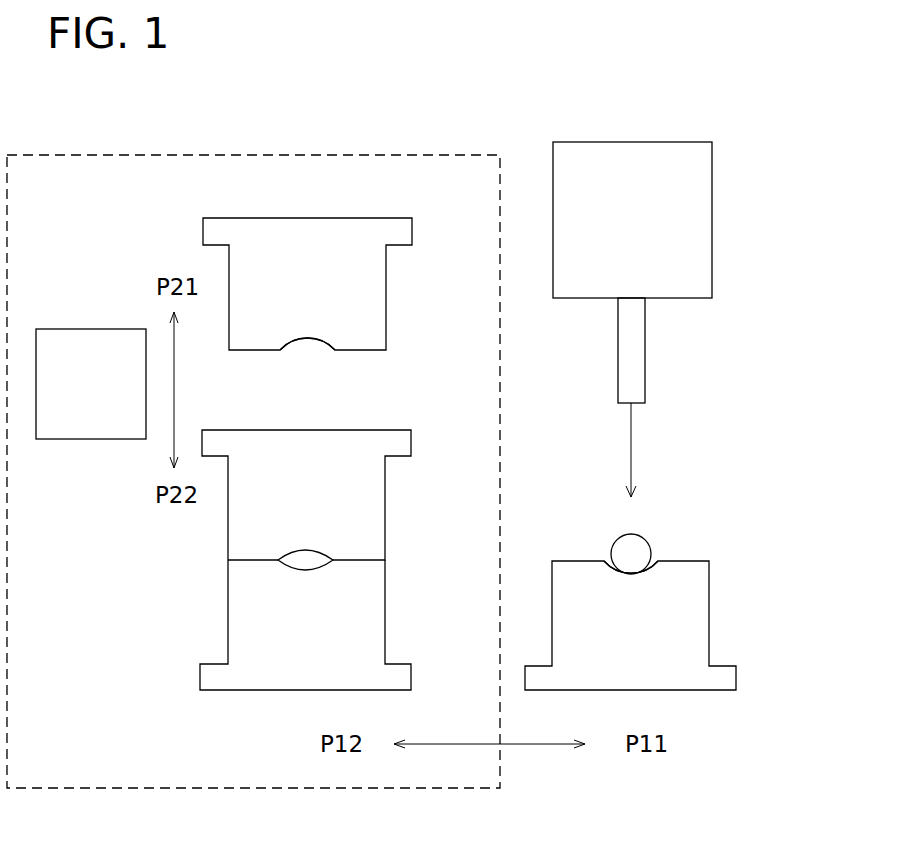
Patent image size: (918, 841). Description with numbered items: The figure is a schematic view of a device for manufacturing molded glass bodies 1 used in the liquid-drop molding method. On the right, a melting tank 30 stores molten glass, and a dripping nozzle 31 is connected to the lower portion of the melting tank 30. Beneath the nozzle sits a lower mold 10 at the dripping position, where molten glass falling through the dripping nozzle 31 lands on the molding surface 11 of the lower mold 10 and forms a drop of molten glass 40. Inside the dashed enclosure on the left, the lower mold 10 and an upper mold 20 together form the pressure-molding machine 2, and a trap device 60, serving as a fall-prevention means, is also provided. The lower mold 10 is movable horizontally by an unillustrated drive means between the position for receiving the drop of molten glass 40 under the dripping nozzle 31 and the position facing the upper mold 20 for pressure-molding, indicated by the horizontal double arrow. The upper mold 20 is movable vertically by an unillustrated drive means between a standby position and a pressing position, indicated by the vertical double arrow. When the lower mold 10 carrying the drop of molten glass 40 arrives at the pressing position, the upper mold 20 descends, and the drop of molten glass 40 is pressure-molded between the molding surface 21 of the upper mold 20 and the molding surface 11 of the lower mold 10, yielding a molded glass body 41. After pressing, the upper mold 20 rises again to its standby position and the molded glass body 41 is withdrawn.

The device for manufacturing molded glass bodies 1 is at (487, 113).
The pressure-molding machine 2 is at (263, 154).
The lower mold 10 is at (385, 615).
The molding surface of lower mold 11 is at (630, 577).
The upper mold 20 is at (386, 273).
The molding surface of upper mold 21 is at (306, 337).
The melting tank 30 is at (712, 195).
The dripping nozzle 31 is at (646, 352).
The drop of molten glass 40 is at (631, 551).
The molded glass body 41 is at (307, 553).
The trap device 60 is at (90, 440).